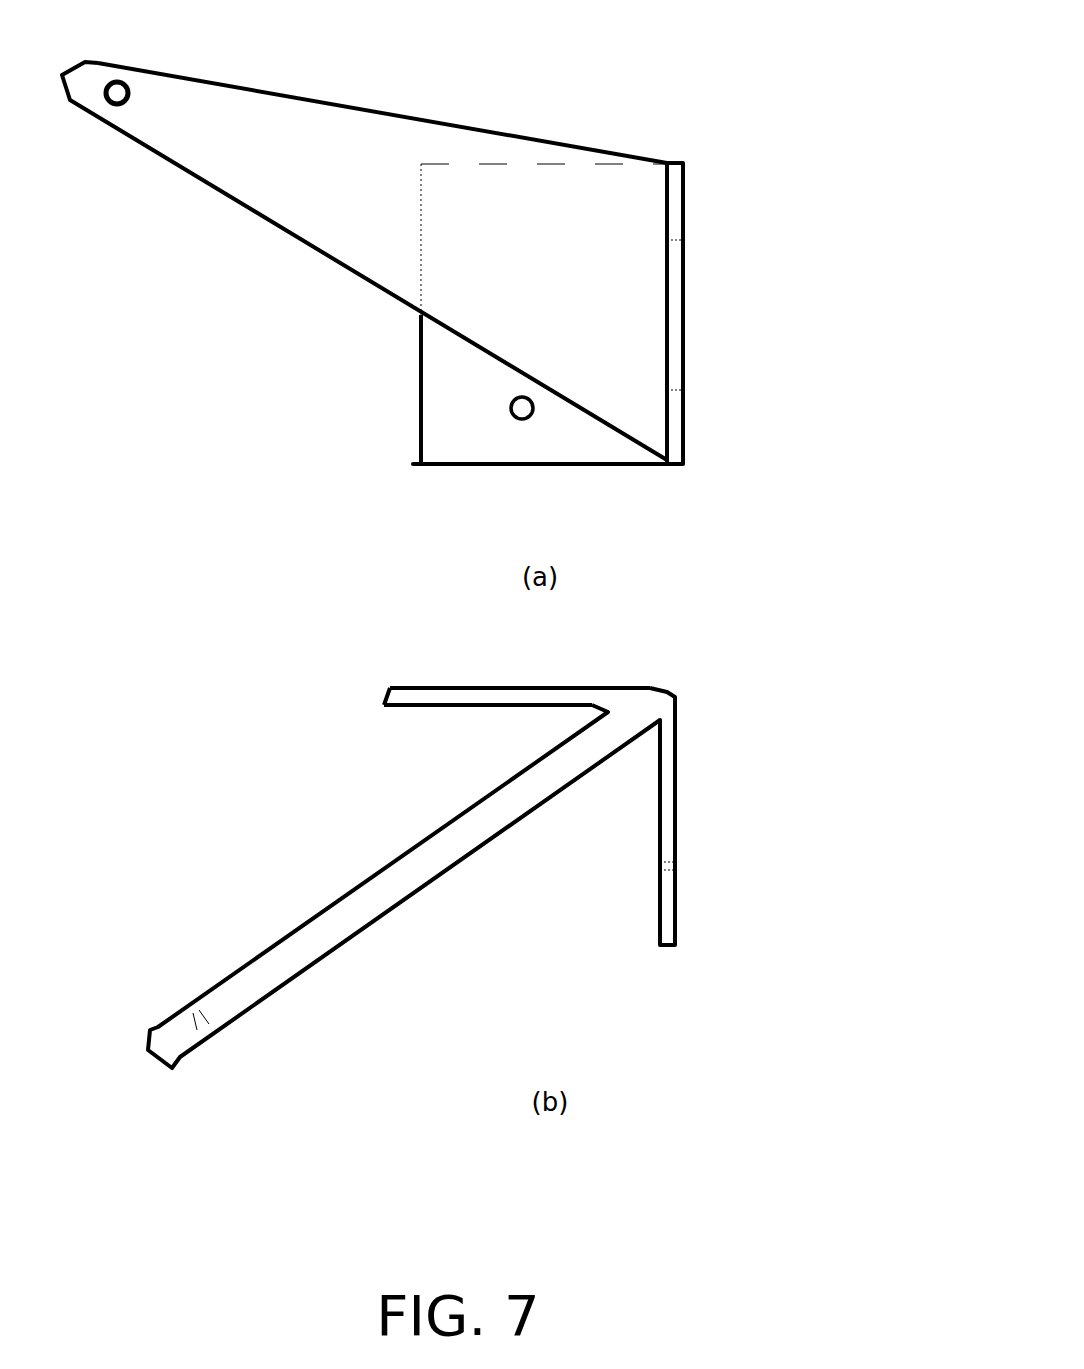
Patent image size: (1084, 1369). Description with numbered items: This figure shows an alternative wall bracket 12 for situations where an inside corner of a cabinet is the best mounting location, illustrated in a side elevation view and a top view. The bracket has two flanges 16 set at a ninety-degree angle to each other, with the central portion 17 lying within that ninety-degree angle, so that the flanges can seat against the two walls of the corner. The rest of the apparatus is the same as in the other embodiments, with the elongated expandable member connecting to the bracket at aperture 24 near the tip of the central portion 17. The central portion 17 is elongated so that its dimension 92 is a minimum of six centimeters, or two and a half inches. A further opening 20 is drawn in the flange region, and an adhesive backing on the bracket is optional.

The wall bracket 12 is at (764, 636).
The flanges 16 is at (455, 687).
The central portion 17 is at (245, 171).
The hole 20 is at (507, 403).
The aperture 24 is at (92, 97).
The dimension 92 is at (67, 0).